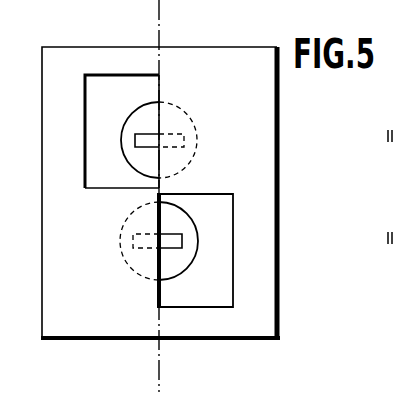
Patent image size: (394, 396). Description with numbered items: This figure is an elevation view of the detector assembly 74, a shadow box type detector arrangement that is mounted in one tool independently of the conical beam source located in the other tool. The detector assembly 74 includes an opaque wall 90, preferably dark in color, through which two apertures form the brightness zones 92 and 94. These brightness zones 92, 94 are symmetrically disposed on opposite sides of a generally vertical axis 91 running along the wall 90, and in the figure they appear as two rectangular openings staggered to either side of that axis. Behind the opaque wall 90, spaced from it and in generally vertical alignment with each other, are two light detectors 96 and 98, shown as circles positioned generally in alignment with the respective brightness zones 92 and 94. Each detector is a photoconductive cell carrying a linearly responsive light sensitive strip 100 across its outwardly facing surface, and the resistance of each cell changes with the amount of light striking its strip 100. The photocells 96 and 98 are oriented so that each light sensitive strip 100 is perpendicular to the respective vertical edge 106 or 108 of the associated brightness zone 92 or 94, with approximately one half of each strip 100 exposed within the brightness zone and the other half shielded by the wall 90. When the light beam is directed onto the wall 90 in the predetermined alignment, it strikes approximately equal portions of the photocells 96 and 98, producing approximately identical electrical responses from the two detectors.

The detector assembly 74 is at (281, 169).
The opaque wall 90 is at (242, 47).
The vertical axis 91 is at (157, 14).
The brightness zone 92 is at (108, 135).
The brightness zone 94 is at (228, 258).
The light detector 96 is at (142, 107).
The light detector 98 is at (192, 225).
The light sensitive strip 100 is at (140, 148).
The vertical edge 106 is at (160, 86).
The vertical edge 108 is at (158, 197).